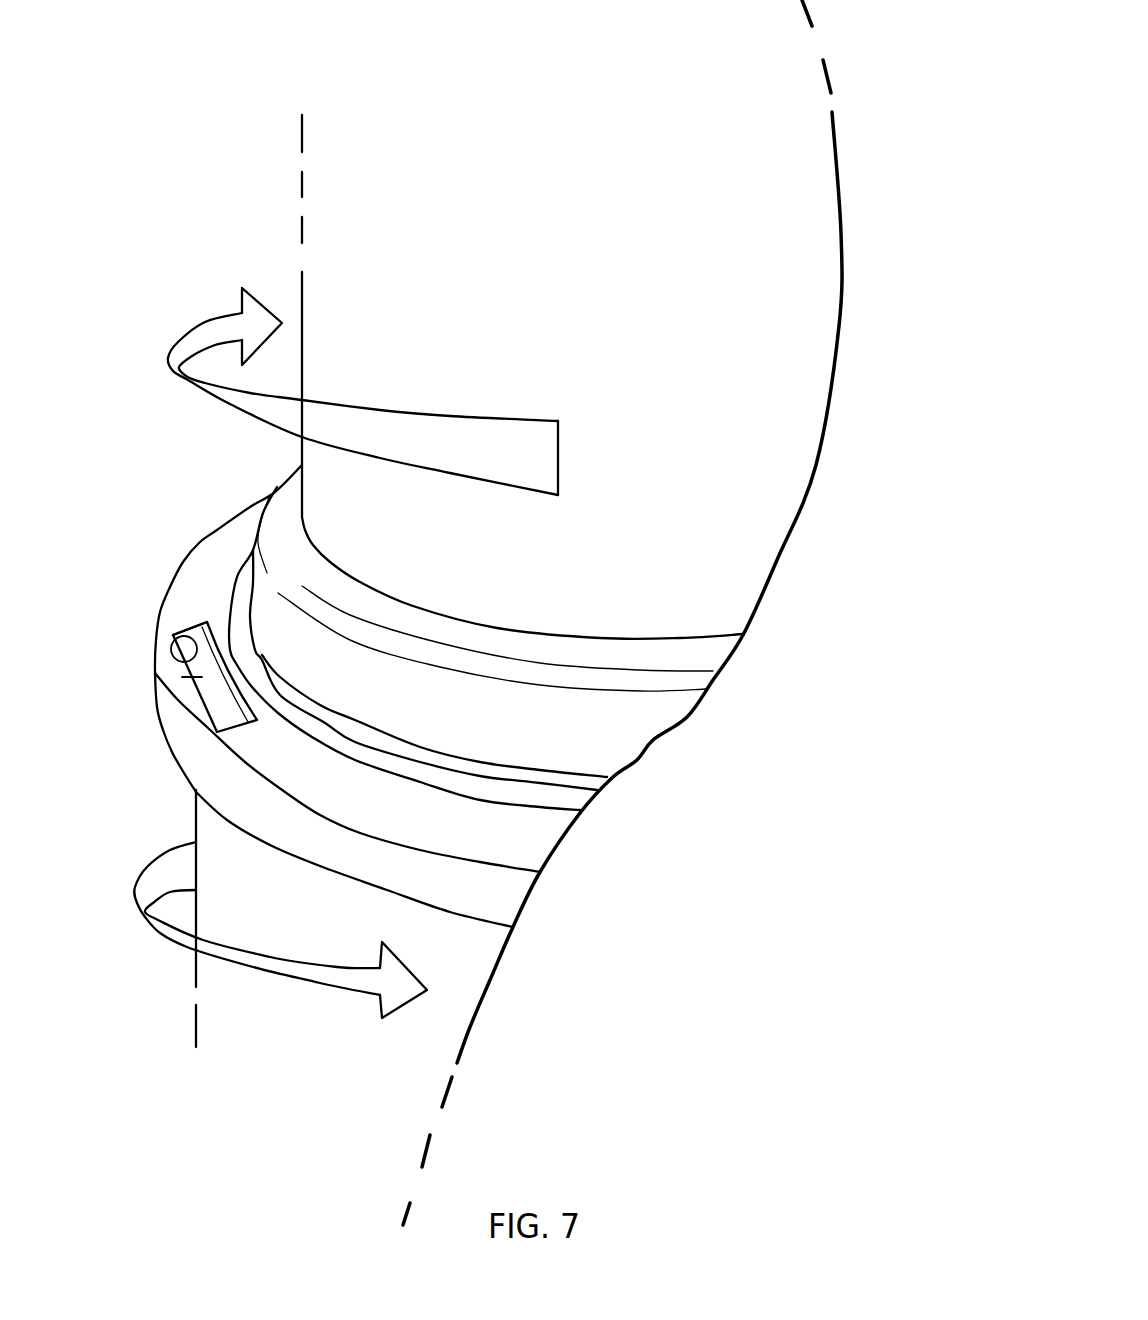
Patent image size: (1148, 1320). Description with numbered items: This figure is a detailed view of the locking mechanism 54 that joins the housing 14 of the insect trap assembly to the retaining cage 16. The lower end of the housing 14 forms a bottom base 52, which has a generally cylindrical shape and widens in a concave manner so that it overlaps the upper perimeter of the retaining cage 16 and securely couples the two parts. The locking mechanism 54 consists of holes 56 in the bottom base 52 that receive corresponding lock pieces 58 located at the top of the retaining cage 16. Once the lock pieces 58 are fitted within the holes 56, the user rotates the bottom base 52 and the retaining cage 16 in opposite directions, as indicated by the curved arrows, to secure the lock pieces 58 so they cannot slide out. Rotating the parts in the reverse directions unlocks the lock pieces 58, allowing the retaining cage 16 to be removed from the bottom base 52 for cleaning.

The housing 14 is at (270, 238).
The retaining cage 16 is at (267, 1010).
The bottom base 52 is at (237, 538).
The locking mechanism 54 is at (118, 466).
The locking holes 56 is at (178, 637).
The lock pieces 58 is at (202, 699).